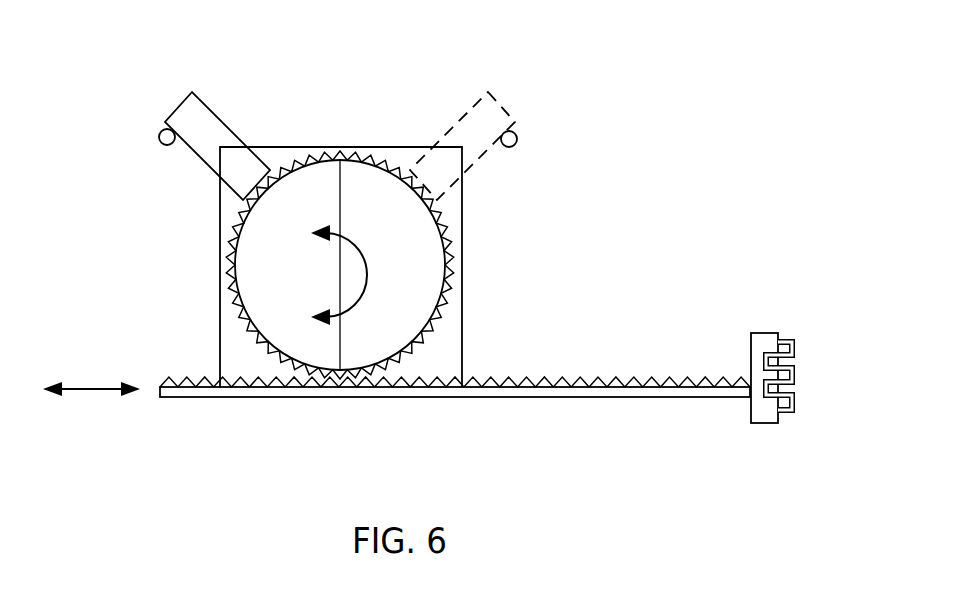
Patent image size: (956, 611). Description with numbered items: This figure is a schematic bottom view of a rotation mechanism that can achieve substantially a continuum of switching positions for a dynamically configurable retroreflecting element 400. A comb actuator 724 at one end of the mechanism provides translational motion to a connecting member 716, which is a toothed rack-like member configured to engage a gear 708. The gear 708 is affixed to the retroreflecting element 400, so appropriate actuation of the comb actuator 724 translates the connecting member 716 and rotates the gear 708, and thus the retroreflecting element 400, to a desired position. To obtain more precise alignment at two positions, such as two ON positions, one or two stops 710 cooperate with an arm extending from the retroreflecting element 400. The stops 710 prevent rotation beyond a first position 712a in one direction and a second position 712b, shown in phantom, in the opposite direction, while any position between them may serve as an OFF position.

The retroreflecting element 400 is at (628, 108).
The gear 708 is at (320, 273).
The stop 710 is at (162, 148).
The first position of arm 712a is at (208, 130).
The second position of arm 712b is at (452, 145).
The connecting member 716 is at (490, 398).
The comb actuator 724 is at (765, 423).